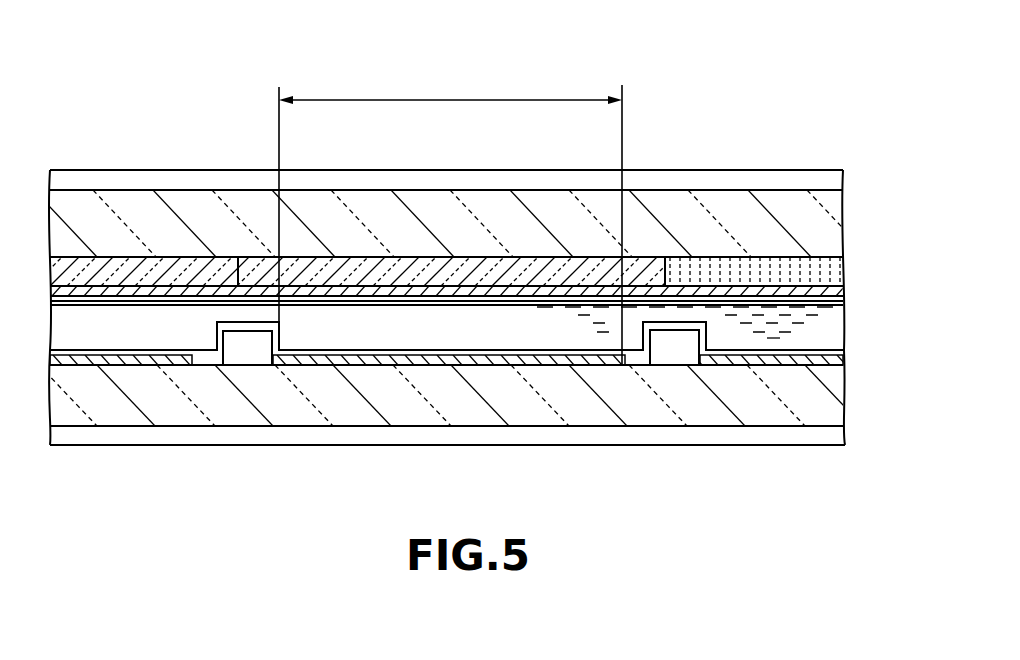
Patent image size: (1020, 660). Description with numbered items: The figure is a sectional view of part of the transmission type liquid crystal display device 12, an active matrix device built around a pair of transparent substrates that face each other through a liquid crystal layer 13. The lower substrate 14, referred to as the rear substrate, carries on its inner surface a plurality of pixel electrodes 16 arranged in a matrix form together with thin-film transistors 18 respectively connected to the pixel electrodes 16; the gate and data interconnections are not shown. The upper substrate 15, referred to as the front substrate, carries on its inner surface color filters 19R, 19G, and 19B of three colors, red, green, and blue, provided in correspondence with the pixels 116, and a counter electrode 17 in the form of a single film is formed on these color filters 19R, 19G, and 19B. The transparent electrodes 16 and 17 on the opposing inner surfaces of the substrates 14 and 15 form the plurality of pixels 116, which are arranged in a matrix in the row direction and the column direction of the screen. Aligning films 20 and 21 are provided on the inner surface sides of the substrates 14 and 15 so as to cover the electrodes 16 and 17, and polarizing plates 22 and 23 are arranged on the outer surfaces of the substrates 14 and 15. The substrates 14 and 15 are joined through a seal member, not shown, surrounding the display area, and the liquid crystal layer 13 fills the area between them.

The transmission type liquid crystal display device 12 is at (812, 154).
The liquid crystal layer 13 is at (823, 323).
The lower substrate 14 is at (823, 392).
The upper substrate 15 is at (823, 232).
The pixel electrode 16 is at (140, 362).
The counter electrode 17 is at (500, 292).
The thin-film transistor 18 is at (243, 353).
The red color filter 19R is at (175, 266).
The green color filter 19G is at (412, 266).
The blue color filter 19B is at (735, 266).
The aligning film 20 is at (437, 350).
The aligning film 21 is at (313, 302).
The polarizing plate 22 is at (88, 439).
The polarizing plate 23 is at (95, 170).
The pixel 116 is at (450, 98).